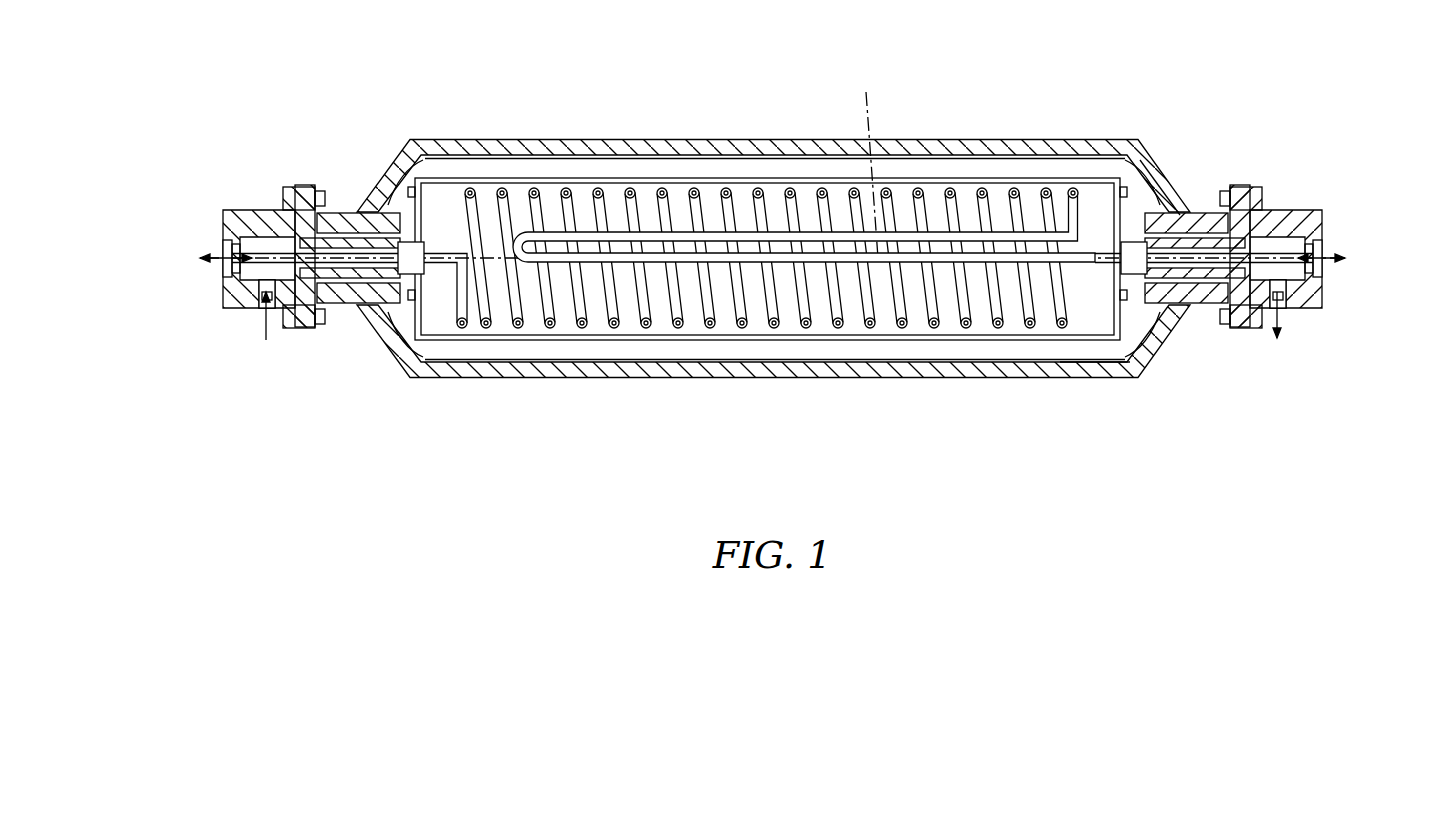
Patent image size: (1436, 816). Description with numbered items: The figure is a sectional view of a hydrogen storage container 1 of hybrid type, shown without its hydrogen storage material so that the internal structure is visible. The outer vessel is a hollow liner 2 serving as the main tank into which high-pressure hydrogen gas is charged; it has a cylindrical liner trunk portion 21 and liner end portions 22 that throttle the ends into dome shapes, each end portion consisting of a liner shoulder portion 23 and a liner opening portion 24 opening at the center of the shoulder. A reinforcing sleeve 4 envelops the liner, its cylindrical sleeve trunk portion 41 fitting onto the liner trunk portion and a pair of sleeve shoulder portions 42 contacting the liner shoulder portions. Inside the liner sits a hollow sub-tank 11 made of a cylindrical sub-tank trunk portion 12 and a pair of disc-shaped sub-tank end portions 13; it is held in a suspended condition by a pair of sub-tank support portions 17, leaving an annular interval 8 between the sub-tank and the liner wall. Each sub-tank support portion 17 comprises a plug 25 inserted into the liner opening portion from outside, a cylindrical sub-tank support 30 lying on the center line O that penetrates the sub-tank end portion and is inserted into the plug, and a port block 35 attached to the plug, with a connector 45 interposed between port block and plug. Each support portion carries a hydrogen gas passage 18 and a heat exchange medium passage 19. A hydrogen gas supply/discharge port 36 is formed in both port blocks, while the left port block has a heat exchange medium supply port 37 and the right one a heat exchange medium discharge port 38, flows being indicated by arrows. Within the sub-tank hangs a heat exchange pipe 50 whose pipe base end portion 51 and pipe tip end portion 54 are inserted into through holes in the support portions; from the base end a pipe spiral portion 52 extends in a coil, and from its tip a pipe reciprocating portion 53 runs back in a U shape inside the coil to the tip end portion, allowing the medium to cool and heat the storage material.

The hydrogen storage container 1 is at (1184, 124).
The liner 2 is at (295, 58).
The liner trunk portion 21 is at (440, 152).
The liner end portions 22 is at (377, 200).
The liner shoulder portions 23 is at (395, 165).
The liner opening portions 24 is at (343, 215).
The reinforcing sleeve 4 is at (1135, 452).
The sleeve trunk portion 41 is at (1085, 375).
The sleeve shoulder portions 42 is at (1172, 300).
The annular interval 8 is at (740, 170).
The sub-tank 11 is at (1135, 59).
The sub-tank trunk portion 12 is at (1078, 180).
The sub-tank end portions 13 is at (1117, 186).
The sub-tank support portions 17 is at (400, 452).
The hydrogen gas passage 18 is at (231, 238).
The hydrogen gas supply/discharge port 36 is at (772, 258).
The heat exchange medium passage 19 is at (265, 300).
The heat exchange medium supply port 37 is at (267, 294).
The heat exchange medium discharge port 38 is at (1278, 294).
The plug 25 is at (345, 303).
The sub-tank support 30 is at (358, 308).
The port block 35 is at (287, 334).
The connector 45 is at (259, 186).
The heat exchange pipe 50 is at (415, 452).
The pipe base end portion 51 is at (440, 268).
The pipe spiral portion 52 is at (682, 325).
The pipe reciprocating portion 53 is at (828, 250).
The pipe tip end portion 54 is at (1105, 266).
The center line O is at (775, 161).